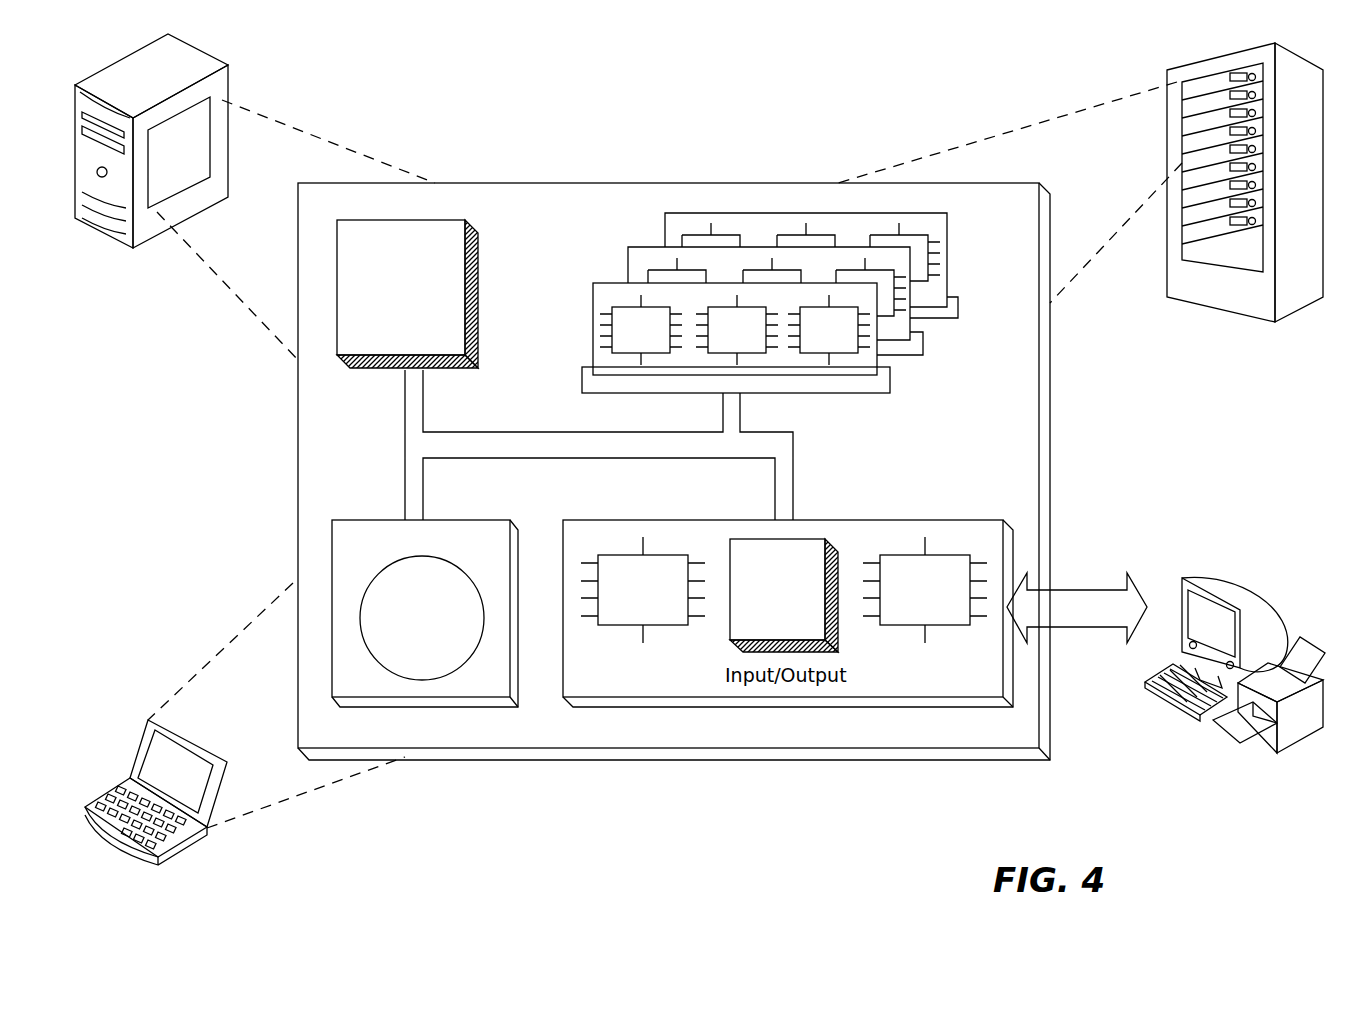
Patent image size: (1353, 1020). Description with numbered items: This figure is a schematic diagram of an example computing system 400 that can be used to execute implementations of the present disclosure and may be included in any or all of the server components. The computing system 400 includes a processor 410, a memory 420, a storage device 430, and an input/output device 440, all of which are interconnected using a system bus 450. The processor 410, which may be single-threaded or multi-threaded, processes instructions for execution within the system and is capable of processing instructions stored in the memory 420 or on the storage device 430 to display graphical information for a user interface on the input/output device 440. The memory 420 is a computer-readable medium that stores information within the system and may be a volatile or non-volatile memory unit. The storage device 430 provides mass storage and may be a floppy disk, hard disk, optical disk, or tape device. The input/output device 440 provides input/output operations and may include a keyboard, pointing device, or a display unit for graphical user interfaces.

The computing system 400 is at (495, 100).
The processor 410 is at (458, 350).
The memory 420 is at (956, 357).
The storage device 430 is at (501, 687).
The input/output device 440 is at (1176, 580).
The system bus 450 is at (593, 450).